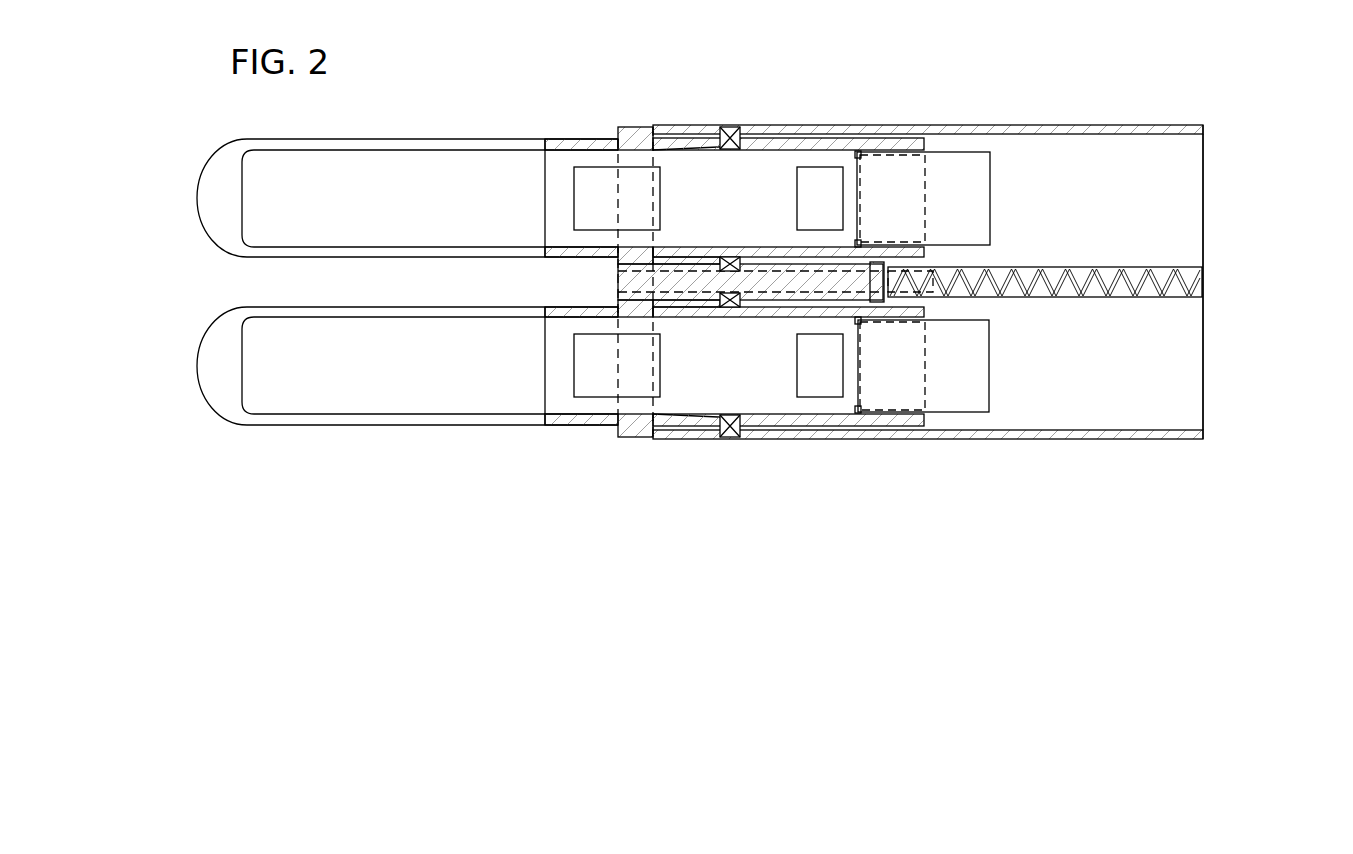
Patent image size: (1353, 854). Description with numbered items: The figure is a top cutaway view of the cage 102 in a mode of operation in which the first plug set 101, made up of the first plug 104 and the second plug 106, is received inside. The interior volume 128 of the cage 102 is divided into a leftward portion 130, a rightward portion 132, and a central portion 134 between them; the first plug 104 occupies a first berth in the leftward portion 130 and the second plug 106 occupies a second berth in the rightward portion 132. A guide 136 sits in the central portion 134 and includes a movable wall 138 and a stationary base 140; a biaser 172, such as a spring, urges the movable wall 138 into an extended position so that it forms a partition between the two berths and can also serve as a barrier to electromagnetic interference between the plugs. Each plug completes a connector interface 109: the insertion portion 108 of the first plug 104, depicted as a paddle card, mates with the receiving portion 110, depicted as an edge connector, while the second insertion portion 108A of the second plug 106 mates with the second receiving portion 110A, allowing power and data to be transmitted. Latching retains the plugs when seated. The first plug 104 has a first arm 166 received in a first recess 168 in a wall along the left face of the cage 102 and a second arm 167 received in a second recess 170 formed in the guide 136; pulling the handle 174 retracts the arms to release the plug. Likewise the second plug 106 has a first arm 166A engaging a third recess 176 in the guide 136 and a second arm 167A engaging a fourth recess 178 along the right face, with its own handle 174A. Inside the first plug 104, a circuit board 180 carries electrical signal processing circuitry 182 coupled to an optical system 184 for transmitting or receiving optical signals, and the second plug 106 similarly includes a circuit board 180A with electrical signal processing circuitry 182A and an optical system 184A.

The first plug set 101 is at (183, 272).
The cage 102 is at (1107, 93).
The first plug 104 is at (547, 125).
The second plug 106 is at (558, 440).
The insertion portion 108 is at (925, 206).
The second insertion portion 108A is at (925, 366).
The connector interface 109 is at (930, 106).
The receiving portion 110 is at (990, 200).
The second receiving portion 110A is at (990, 372).
The interior volume 128 is at (1135, 150).
The leftward portion 130 is at (1175, 186).
The rightward portion 132 is at (1137, 420).
The central portion 134 is at (1218, 286).
The guide 136 is at (578, 281).
The movable wall 138 is at (860, 245).
The base 140 is at (872, 301).
The first arm 166 is at (737, 138).
The first arm 166A is at (727, 312).
The second arm 167 is at (727, 258).
The second arm 167A is at (740, 440).
The first recess 168 is at (730, 128).
The second recess 170 is at (738, 262).
The biaser 172 is at (1148, 282).
The handle 174 is at (226, 170).
The handle 174A is at (226, 338).
The third recess 176 is at (738, 308).
The fourth recess 178 is at (725, 440).
The circuit board 180 is at (837, 158).
The circuit board 180A is at (837, 410).
The electrical signal processing circuitry 182 is at (820, 198).
The electrical signal processing circuitry 182A is at (820, 365).
The optical system 184 is at (617, 198).
The optical system 184A is at (617, 365).